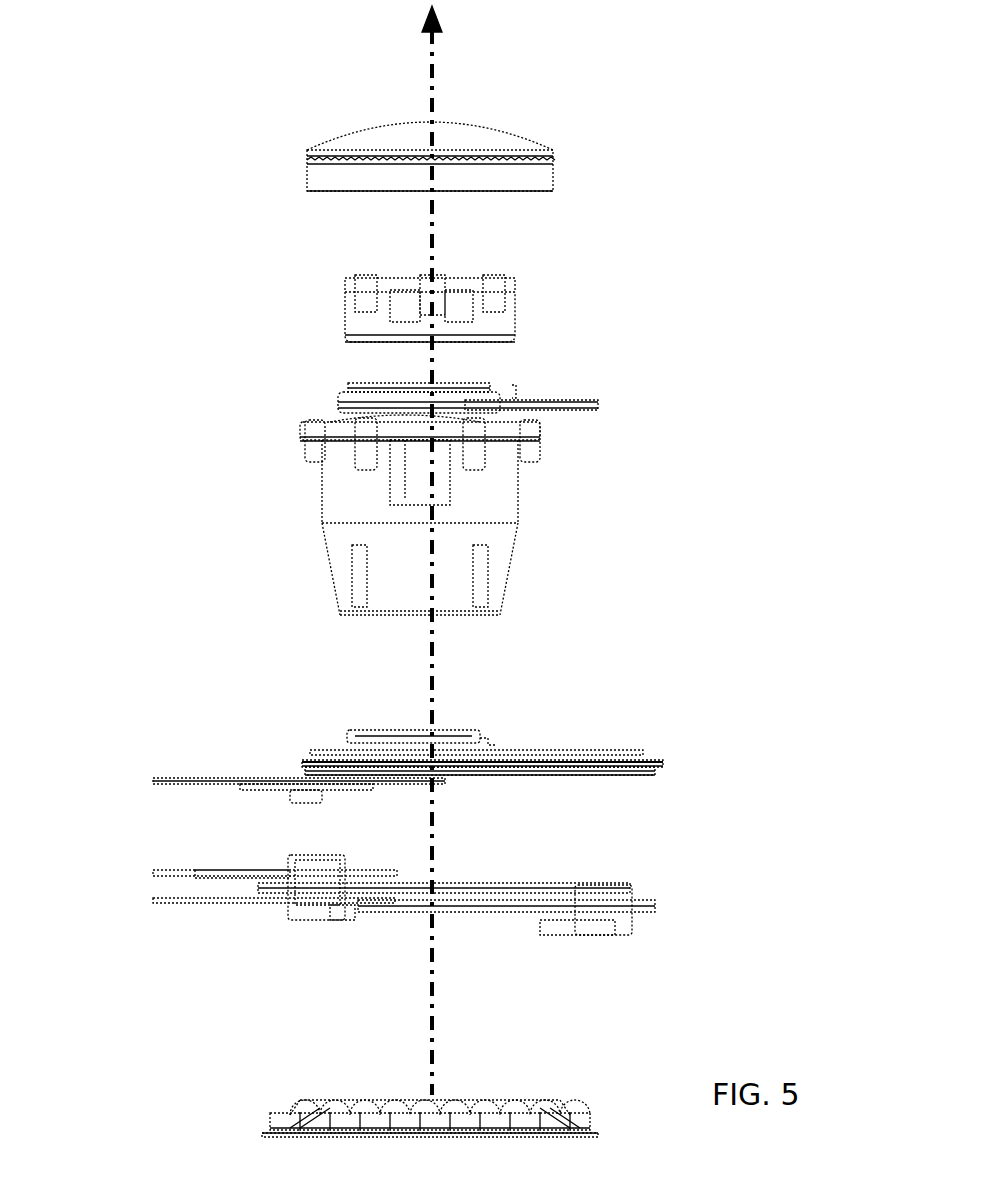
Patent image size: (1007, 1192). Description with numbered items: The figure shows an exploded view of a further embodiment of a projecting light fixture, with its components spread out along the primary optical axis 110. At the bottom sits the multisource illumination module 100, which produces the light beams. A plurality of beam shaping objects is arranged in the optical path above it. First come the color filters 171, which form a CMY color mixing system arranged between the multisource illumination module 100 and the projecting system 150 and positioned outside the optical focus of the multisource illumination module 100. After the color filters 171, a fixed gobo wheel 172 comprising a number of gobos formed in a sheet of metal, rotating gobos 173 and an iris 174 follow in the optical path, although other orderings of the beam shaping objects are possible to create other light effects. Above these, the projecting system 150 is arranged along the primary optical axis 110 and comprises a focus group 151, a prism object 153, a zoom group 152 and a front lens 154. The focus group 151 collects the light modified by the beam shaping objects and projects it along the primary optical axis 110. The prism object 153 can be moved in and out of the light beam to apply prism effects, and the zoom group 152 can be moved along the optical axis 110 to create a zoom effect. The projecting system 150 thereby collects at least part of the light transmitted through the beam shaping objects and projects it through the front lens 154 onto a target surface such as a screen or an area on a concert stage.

The primary optical axis 110 is at (410, 68).
The front lens 154 is at (540, 128).
The zoom group 152 is at (520, 302).
The prism object 153 is at (338, 383).
The focus group 151 is at (535, 505).
The projecting system 150 is at (724, 413).
The iris 174 is at (490, 728).
The rotating gobos 173 is at (560, 780).
The fixed gobo wheel 172 is at (245, 765).
The color filters 171 is at (140, 886).
The multisource illumination module 100 is at (258, 1097).